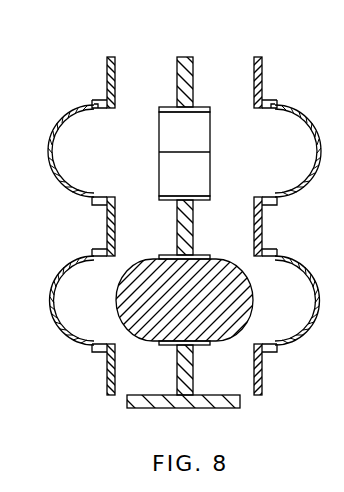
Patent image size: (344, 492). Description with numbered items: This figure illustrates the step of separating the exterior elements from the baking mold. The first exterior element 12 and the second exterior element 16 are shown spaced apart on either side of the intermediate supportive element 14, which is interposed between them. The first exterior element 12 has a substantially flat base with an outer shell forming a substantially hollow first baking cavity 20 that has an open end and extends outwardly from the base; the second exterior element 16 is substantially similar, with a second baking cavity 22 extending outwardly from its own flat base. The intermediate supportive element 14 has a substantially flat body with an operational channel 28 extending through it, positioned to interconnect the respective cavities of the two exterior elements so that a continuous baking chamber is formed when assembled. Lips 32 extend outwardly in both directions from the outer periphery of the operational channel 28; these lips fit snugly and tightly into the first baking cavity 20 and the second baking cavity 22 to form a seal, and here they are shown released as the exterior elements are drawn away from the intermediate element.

The first exterior element 12 is at (107, 78).
The intermediate supportive element 14 is at (197, 75).
The second exterior element 16 is at (261, 85).
The first baking cavity 20 is at (57, 127).
The second baking cavity 22 is at (308, 267).
The operational channel 28 is at (197, 133).
The lip 32 is at (167, 107).